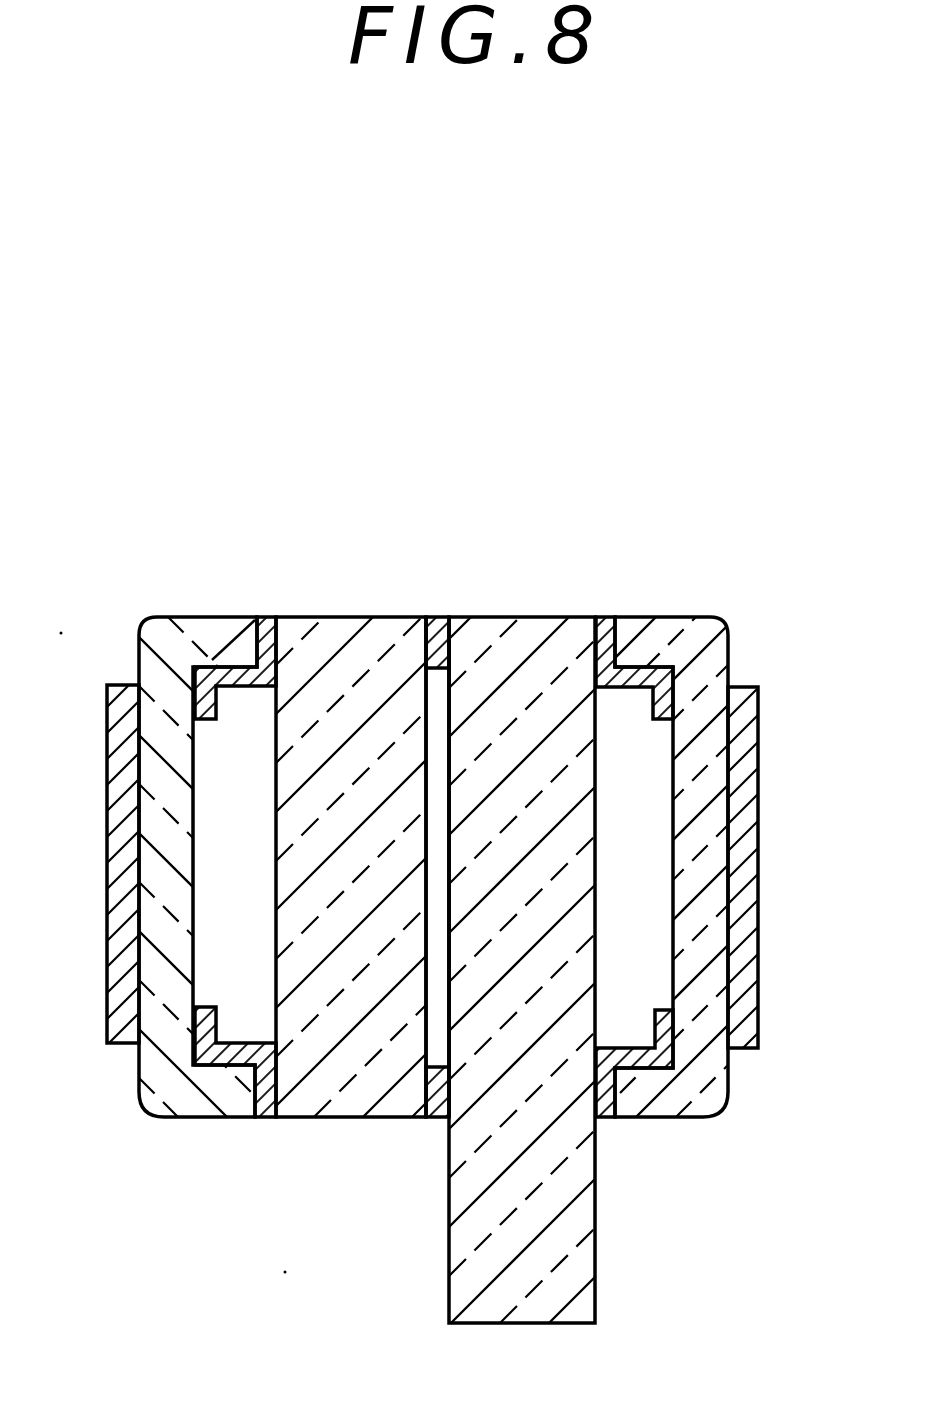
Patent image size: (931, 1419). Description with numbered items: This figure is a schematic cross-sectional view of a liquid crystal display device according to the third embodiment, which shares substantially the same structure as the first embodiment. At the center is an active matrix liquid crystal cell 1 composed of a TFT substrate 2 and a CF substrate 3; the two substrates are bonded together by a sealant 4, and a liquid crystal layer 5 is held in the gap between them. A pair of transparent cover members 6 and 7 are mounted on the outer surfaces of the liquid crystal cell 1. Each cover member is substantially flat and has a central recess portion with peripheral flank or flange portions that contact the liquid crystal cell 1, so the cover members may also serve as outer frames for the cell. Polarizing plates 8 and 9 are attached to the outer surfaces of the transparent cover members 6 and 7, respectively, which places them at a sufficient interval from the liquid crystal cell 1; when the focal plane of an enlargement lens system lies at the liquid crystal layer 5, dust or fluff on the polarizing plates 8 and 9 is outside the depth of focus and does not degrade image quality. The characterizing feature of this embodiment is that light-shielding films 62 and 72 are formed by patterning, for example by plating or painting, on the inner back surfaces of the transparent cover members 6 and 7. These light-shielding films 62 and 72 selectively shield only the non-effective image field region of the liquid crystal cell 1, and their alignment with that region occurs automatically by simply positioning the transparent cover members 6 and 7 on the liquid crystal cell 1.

The liquid crystal cell 1 is at (448, 514).
The TFT substrate 2 is at (572, 640).
The CF substrate 3 is at (343, 618).
The sealant 4 is at (432, 627).
The liquid crystal layer 5 is at (443, 738).
The transparent cover member 6 is at (717, 627).
The transparent cover member 7 is at (195, 630).
The polarizing plate 8 is at (752, 862).
The polarizing plate 9 is at (120, 783).
The light-shielding film 62 is at (662, 1055).
The light-shielding film 72 is at (265, 1090).